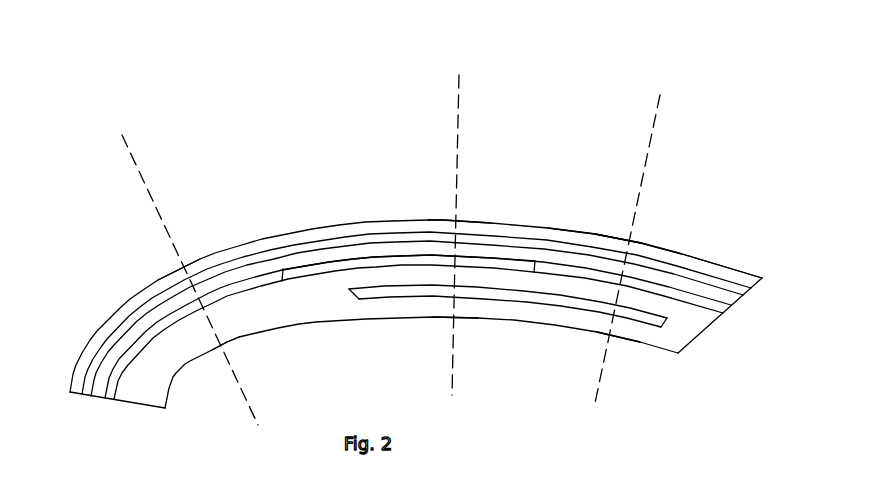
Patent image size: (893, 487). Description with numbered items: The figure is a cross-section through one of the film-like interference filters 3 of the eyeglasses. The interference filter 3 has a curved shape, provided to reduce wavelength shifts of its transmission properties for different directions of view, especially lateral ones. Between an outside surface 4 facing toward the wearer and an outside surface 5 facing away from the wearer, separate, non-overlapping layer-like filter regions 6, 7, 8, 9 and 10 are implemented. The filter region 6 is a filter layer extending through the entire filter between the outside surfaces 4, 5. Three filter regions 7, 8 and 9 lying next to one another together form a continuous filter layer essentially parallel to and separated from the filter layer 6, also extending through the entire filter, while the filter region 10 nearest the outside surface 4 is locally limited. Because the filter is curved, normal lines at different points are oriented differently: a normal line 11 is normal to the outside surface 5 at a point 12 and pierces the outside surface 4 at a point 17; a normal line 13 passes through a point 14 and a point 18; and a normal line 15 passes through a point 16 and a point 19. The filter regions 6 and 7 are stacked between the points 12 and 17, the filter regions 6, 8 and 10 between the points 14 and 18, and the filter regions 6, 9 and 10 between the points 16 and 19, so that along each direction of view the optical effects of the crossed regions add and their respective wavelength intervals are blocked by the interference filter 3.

The interference filter 3 is at (582, 73).
The outside surface 4 is at (302, 330).
The outside surface 5 is at (668, 249).
The filter region 6 is at (295, 251).
The filter region 7 is at (137, 332).
The filter region 8 is at (323, 262).
The filter region 9 is at (725, 312).
The filter region 10 is at (535, 308).
The normal line 11 is at (137, 163).
The point 12 is at (186, 266).
The normal line 13 is at (458, 103).
The point 14 is at (455, 221).
The normal line 15 is at (651, 147).
The point 16 is at (630, 239).
The point 17 is at (222, 347).
The point 18 is at (447, 318).
The point 19 is at (610, 337).